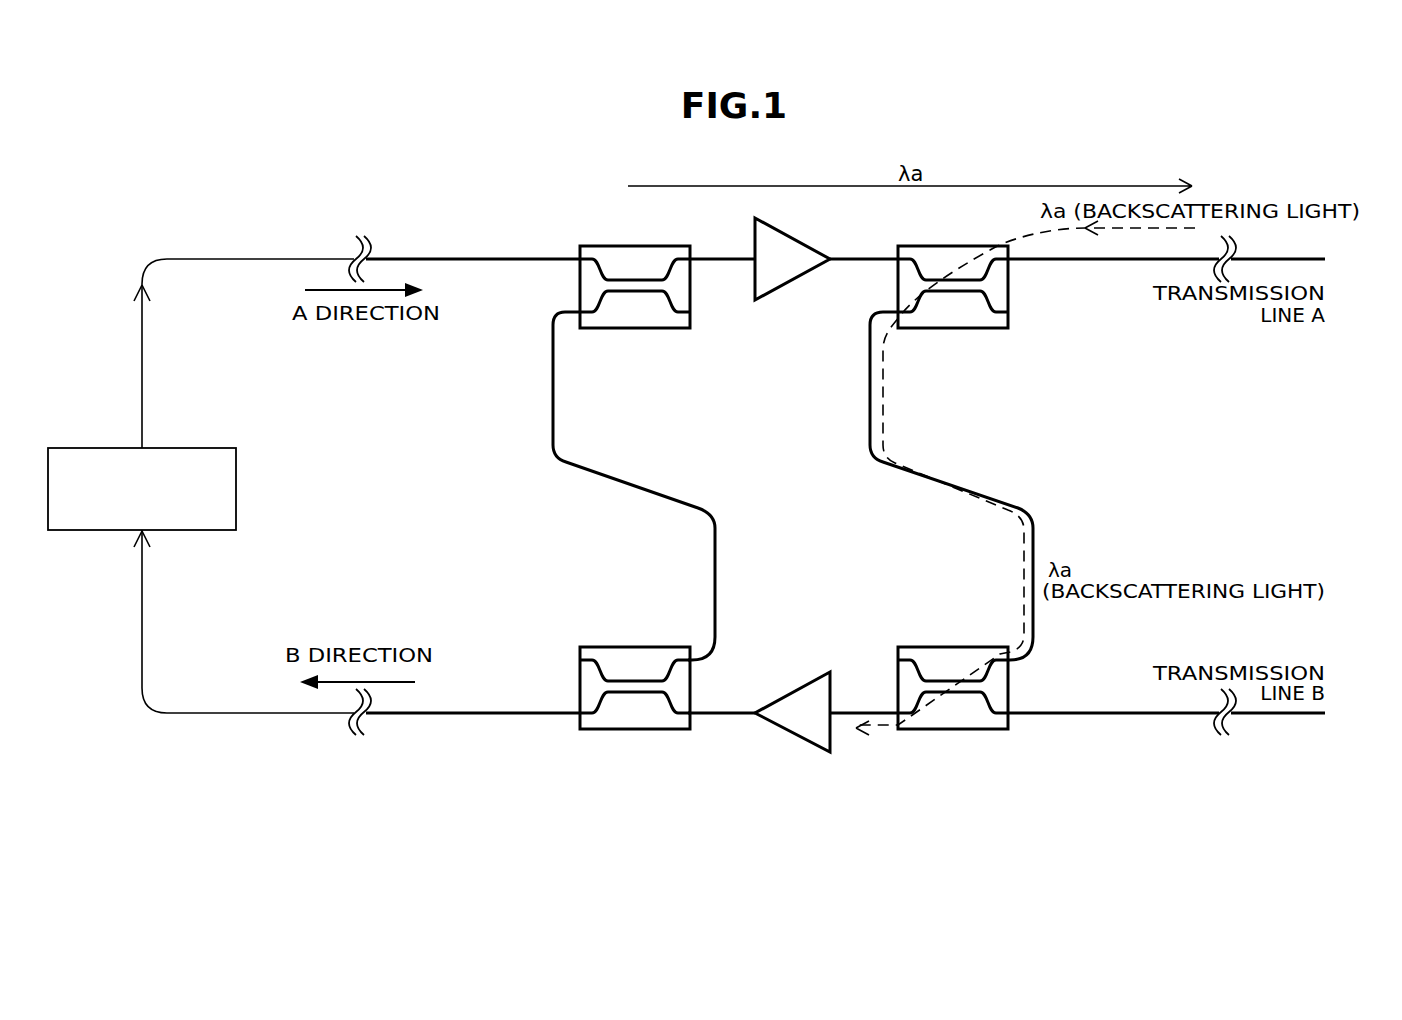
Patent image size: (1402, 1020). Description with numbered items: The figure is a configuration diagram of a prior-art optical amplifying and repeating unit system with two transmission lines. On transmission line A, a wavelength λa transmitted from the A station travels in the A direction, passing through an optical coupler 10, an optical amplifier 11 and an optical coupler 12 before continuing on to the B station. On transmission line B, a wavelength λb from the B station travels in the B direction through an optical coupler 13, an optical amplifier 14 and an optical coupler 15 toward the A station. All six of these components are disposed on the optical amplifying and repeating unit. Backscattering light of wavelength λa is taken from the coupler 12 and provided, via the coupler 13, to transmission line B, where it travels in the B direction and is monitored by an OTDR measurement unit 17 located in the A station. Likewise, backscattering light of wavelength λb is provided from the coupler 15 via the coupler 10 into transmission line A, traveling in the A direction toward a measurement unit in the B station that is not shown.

The optical coupler 10 is at (642, 246).
The optical amplifier 11 is at (790, 233).
The optical coupler 12 is at (1010, 305).
The optical coupler 13 is at (950, 646).
The optical amplifier 14 is at (783, 696).
The optical coupler 15 is at (630, 647).
The OTDR measurement unit 17 is at (236, 491).